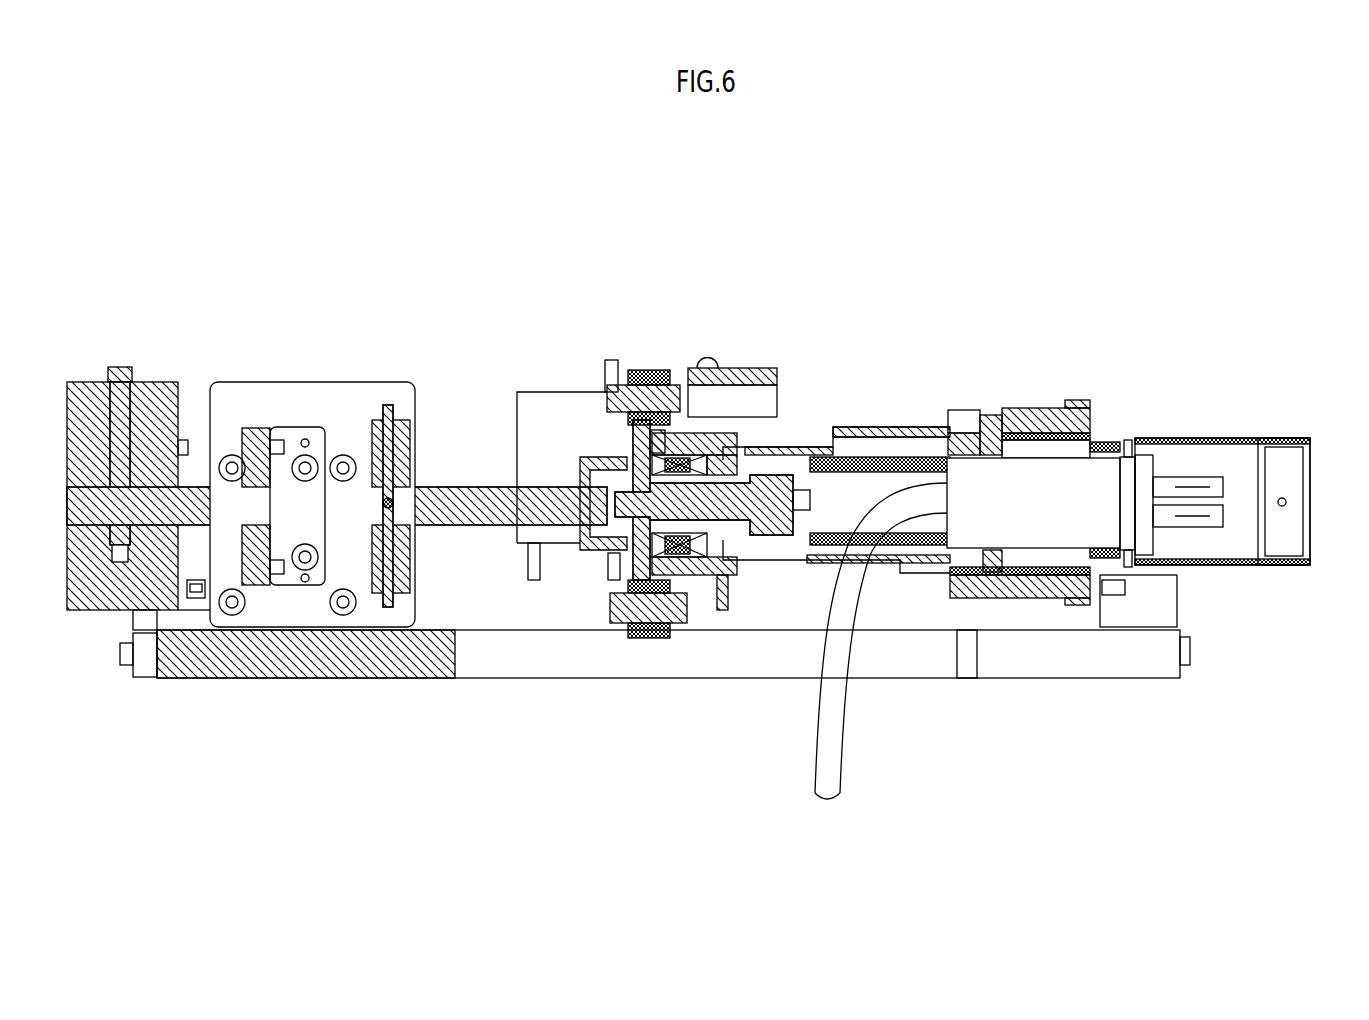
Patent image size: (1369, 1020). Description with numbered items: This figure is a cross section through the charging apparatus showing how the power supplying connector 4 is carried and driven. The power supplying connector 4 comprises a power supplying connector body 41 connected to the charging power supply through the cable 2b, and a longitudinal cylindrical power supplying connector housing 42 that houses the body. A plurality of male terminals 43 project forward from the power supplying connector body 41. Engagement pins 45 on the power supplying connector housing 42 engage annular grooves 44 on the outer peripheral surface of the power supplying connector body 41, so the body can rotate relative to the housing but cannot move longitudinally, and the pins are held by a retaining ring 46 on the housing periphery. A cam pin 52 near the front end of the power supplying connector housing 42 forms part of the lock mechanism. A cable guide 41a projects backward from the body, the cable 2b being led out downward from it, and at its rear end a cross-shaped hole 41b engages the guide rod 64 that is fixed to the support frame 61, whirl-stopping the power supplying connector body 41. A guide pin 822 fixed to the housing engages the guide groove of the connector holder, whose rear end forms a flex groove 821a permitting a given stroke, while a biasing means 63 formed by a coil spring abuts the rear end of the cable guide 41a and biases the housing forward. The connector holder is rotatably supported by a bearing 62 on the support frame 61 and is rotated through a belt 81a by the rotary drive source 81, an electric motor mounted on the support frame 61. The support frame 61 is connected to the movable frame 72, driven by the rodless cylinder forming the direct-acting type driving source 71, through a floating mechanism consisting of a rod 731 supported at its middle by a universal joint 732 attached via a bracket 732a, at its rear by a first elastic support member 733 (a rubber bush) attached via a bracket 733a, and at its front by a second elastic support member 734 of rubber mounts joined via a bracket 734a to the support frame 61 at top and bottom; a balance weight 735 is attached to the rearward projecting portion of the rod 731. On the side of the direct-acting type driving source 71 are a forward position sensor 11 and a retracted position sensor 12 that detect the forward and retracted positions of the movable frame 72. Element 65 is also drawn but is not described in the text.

The power supplying connector 4 is at (1213, 425).
The forward position sensor 11 is at (1135, 587).
The retracted position sensor 12 is at (195, 600).
The cable 2b is at (838, 735).
The power supplying connector body 41 is at (1037, 510).
The cable guide 41a is at (905, 457).
The cross-sectional cross-shaped hole 41b is at (812, 460).
The power supplying connector housing 42 is at (1148, 437).
The male terminals 43 is at (1217, 515).
The annular grooves 44 is at (1120, 497).
The engagement pins 45 is at (1137, 553).
The retaining ring 46 is at (1127, 440).
The cam pin 52 is at (1287, 502).
The support frame 61 is at (677, 450).
The bearing 62 is at (700, 578).
The biasing means 63 is at (772, 540).
The guide rod 64 is at (772, 470).
The sensor block 65 is at (757, 392).
The direct-acting type driving source 71 is at (497, 485).
The movable frame 72 is at (258, 382).
The rod 731 is at (480, 523).
The universal joint 732 is at (408, 470).
The bracket 732a is at (382, 428).
The first elastic support member 733 is at (245, 428).
The bracket 733a is at (297, 427).
The second elastic support member 734 is at (648, 383).
The bracket 734a is at (625, 442).
The balance weight 735 is at (97, 380).
The rotary drive source 81 is at (588, 392).
The belt 81a is at (737, 384).
The flex groove 821a is at (965, 412).
The guide pin 822 is at (992, 417).